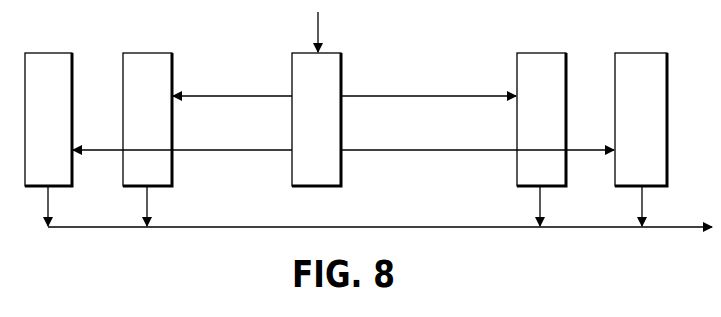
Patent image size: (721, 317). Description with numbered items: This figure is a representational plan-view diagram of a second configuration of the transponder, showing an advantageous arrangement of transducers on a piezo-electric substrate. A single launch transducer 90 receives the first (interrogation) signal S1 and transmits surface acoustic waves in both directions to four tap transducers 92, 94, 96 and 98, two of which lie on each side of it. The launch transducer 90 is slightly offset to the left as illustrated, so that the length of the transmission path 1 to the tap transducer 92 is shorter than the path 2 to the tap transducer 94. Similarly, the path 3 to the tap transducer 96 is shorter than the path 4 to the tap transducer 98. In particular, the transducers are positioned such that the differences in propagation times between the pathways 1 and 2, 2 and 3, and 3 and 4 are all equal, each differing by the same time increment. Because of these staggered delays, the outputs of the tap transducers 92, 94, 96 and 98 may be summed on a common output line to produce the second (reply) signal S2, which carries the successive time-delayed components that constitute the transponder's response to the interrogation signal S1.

The launch transducer 90 is at (302, 60).
The tap transducer 92 is at (162, 58).
The tap transducer 94 is at (555, 58).
The tap transducer 96 is at (62, 58).
The tap transducer 98 is at (657, 60).
The transmission path 1 is at (236, 94).
The path 2 is at (425, 94).
The path 3 is at (239, 152).
The path 4 is at (420, 152).
The first signal S1 is at (320, 26).
The second signal S2 is at (380, 221).